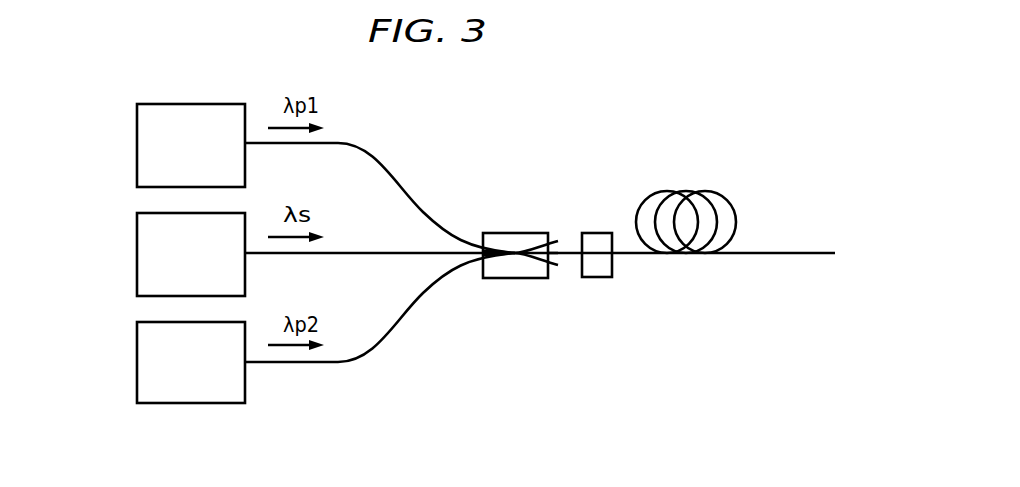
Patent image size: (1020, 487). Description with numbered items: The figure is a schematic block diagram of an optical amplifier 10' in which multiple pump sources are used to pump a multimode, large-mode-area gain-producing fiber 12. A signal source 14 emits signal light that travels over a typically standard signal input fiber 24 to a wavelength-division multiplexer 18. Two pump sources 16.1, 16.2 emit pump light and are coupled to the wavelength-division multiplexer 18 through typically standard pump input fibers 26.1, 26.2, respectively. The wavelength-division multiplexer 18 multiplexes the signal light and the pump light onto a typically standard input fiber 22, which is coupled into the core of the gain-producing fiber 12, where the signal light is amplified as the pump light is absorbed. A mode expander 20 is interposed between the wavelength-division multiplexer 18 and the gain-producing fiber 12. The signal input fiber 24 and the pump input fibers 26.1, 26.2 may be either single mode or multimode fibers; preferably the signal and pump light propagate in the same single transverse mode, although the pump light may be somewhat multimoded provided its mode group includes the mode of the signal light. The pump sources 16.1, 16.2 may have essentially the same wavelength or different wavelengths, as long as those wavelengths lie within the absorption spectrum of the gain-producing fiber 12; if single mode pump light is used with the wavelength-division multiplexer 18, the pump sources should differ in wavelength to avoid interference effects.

The optical amplifier 10' is at (647, 118).
The gain-producing fiber 12 is at (733, 205).
The signal source 14 is at (137, 247).
The pump source 16.1 is at (137, 137).
The pump source 16.2 is at (137, 354).
The wavelength-division multiplexer 18 is at (511, 232).
The mode expander 20 is at (594, 232).
The input fiber 22 is at (563, 258).
The signal input fiber 24 is at (375, 251).
The pump input fiber 26.1 is at (389, 168).
The pump input fiber 26.2 is at (390, 338).